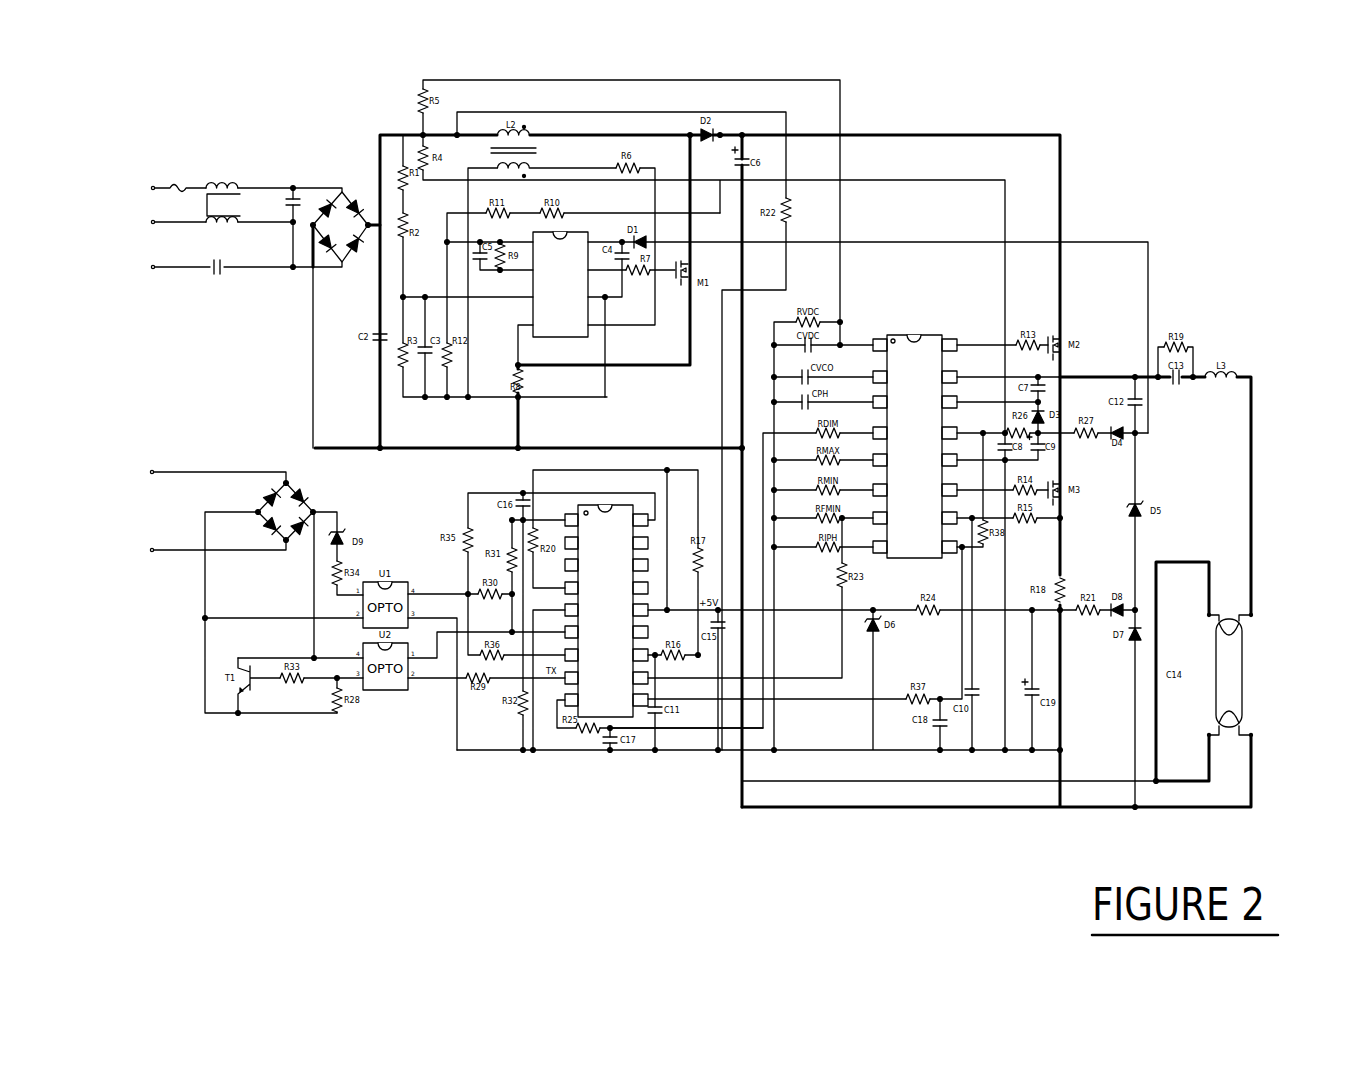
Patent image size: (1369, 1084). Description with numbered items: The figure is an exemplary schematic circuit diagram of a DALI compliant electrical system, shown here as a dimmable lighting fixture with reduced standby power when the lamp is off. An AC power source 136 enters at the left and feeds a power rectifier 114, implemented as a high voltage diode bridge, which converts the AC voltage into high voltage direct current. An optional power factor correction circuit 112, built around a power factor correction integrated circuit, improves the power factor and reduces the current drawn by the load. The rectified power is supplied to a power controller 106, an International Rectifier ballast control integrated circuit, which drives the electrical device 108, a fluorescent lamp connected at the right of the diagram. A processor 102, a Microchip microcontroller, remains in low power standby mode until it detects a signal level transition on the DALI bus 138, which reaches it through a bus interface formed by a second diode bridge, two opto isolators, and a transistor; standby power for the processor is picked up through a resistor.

The processor 102 is at (592, 766).
The power controller 106 is at (918, 318).
The electrical device 108 is at (1263, 658).
The power factor correction circuit 112 is at (574, 323).
The power rectifier 114 is at (326, 172).
The AC power source 136 is at (116, 231).
The DALI bus 138 is at (147, 531).